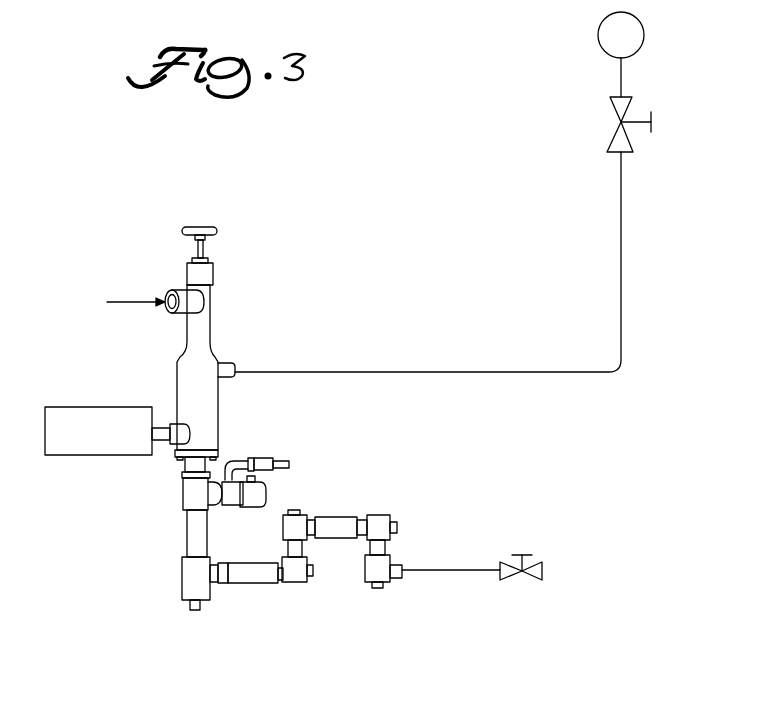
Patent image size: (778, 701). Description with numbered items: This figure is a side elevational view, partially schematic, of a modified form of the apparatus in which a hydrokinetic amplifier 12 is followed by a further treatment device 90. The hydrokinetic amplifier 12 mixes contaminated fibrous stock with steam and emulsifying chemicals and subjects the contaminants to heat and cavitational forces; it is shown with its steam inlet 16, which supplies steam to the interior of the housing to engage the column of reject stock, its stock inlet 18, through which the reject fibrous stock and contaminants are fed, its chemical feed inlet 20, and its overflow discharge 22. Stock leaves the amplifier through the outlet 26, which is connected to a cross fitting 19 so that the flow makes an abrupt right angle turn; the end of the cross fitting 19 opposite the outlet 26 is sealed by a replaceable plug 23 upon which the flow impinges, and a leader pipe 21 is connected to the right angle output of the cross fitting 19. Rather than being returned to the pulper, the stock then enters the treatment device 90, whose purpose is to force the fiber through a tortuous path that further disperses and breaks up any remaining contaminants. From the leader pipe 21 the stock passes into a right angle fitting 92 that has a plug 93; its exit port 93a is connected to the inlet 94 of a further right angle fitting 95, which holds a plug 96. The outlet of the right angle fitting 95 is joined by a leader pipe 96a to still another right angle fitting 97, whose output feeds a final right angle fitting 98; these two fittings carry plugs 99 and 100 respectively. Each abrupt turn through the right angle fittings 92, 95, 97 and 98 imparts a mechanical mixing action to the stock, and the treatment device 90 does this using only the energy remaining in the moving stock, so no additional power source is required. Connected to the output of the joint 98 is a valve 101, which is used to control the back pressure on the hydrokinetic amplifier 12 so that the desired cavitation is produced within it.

The hydrokinetic amplifier 12 is at (175, 372).
The steam inlet 16 is at (378, 372).
The stock inlet 18 is at (183, 289).
The cross fitting 19 is at (182, 570).
The chemical feed inlet 20 is at (232, 378).
The leader pipe 21 is at (222, 584).
The overflow discharge 22 is at (218, 478).
The plug 23 is at (192, 608).
The outlet 26 is at (187, 542).
The treatment device 90 is at (337, 503).
The right angle fitting 92 is at (292, 579).
The plug 93 is at (314, 573).
The exit port 93a is at (287, 556).
The inlet 94 is at (300, 512).
The right angle fitting 95 is at (283, 526).
The plug 96 is at (294, 510).
The leader pipe 96a is at (347, 538).
The right angle fitting 97 is at (385, 515).
The right angle fitting 98 is at (392, 566).
The plug 99 is at (397, 529).
The plug 100 is at (378, 589).
The valve 101 is at (500, 580).